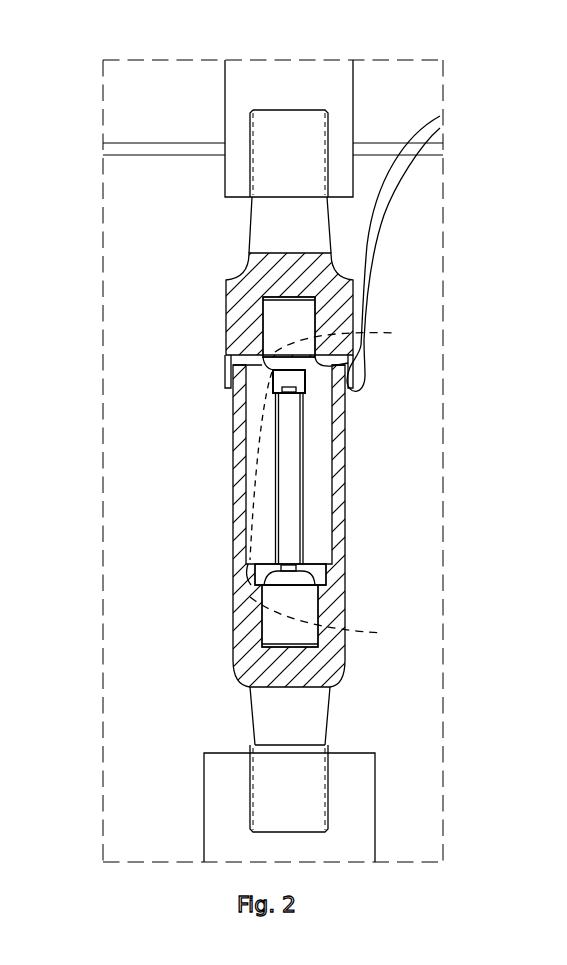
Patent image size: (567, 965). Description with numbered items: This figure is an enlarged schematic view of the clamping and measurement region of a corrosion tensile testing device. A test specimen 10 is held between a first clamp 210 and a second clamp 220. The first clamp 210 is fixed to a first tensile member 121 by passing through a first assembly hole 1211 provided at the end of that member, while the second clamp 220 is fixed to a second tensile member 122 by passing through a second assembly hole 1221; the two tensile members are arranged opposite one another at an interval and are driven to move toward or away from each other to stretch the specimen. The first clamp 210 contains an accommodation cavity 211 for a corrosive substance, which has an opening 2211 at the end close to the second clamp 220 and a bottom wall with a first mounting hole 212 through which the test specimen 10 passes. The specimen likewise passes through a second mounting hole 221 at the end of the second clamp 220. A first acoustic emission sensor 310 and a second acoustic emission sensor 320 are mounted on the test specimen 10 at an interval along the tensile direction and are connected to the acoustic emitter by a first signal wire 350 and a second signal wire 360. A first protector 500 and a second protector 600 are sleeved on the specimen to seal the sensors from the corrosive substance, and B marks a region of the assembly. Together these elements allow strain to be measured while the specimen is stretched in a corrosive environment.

The test specimen 10 is at (304, 487).
The first tensile member 121 is at (227, 825).
The first assembly hole 1211 is at (335, 798).
The second tensile member 122 is at (255, 82).
The second assembly hole 1221 is at (334, 147).
The first clamp 210 is at (267, 526).
The accommodation cavity 211 is at (315, 536).
The opening 2211 is at (251, 372).
The first mounting hole 212 is at (319, 616).
The second clamp 220 is at (263, 293).
The second mounting hole 221 is at (319, 322).
The first acoustic emission sensor 310 is at (294, 566).
The second acoustic emission sensor 320 is at (292, 388).
The first signal wire 350 is at (380, 247).
The second signal wire 360 is at (377, 203).
The first protector 500 is at (255, 577).
The second protector 600 is at (283, 381).
The flow path B is at (260, 428).